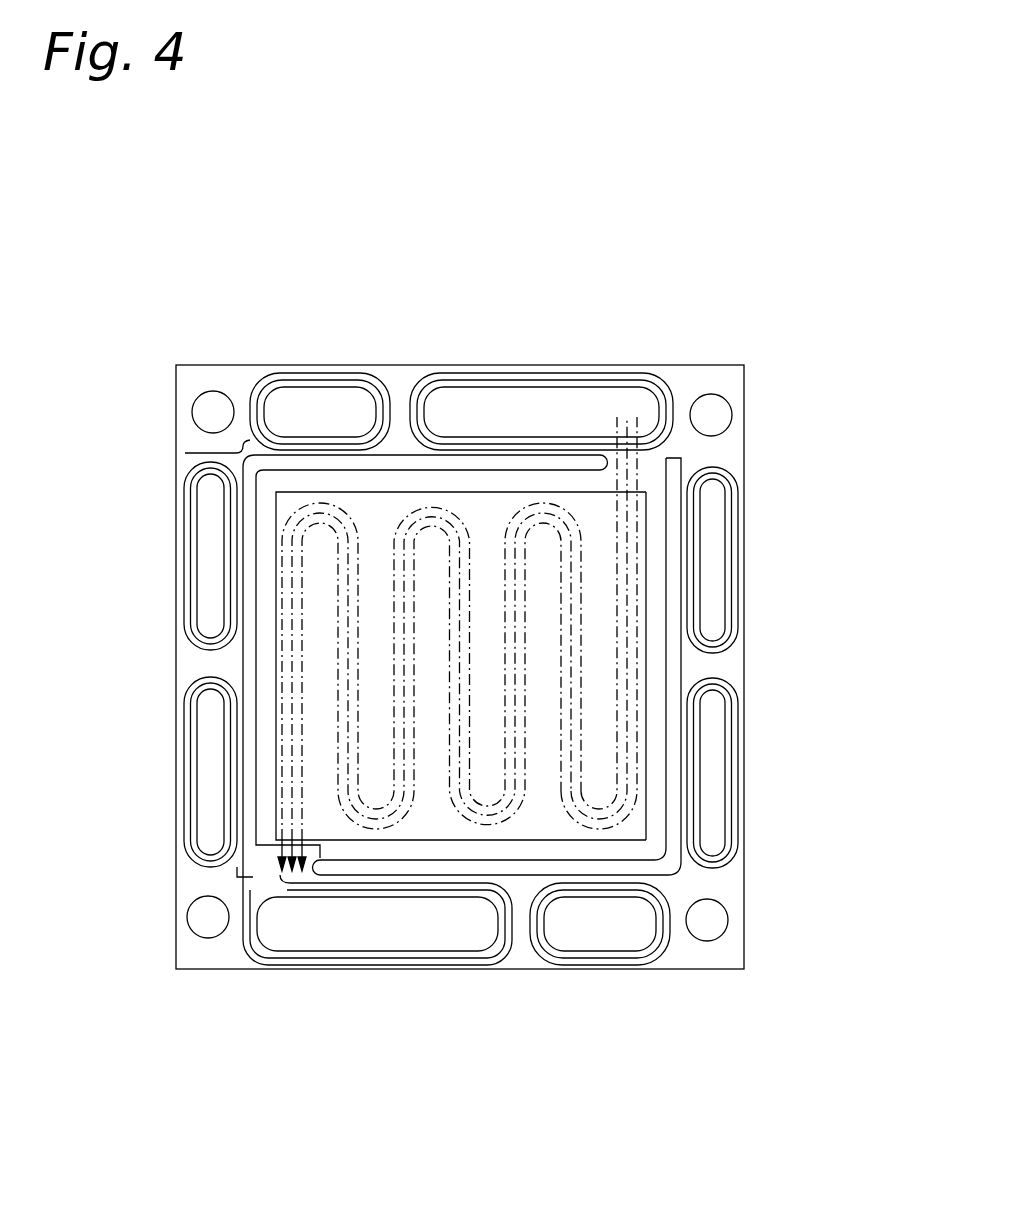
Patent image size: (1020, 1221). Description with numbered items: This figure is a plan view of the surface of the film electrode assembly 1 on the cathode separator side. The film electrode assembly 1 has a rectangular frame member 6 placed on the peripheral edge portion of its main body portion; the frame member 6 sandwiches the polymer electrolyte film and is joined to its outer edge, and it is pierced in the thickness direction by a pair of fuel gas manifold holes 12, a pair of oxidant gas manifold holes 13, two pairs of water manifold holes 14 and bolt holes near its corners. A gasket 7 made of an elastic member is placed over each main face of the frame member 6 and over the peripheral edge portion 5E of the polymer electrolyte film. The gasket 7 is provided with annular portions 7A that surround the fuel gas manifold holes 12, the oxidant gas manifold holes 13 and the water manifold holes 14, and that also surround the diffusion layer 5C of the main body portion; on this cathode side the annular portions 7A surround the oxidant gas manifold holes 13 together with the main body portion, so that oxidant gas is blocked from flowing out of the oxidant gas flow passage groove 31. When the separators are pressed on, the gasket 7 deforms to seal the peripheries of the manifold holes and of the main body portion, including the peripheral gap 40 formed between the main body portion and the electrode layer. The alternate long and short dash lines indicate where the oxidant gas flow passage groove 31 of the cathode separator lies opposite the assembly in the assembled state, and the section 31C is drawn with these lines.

The film electrode assembly 1 is at (817, 368).
The frame member 6 is at (734, 378).
The fuel gas manifold hole 12 is at (308, 392).
The oxidant gas manifold hole 13 is at (535, 400).
The water manifold hole 14 is at (205, 578).
The gasket 7 is at (666, 922).
The annular portion 7A is at (263, 540).
The peripheral edge portion 5E is at (440, 490).
The diffusion layer 5C is at (640, 510).
The peripheral gap 40 is at (663, 551).
The oxidant gas flow passage groove 31 is at (655, 378).
The coolant flow channel turn portion 31C is at (562, 812).